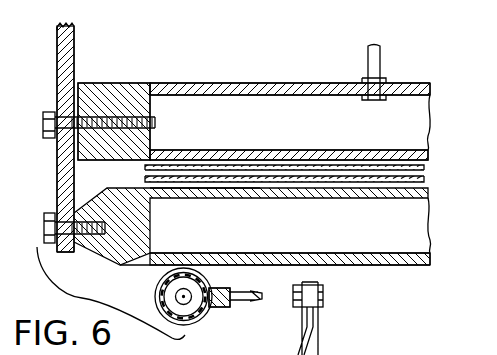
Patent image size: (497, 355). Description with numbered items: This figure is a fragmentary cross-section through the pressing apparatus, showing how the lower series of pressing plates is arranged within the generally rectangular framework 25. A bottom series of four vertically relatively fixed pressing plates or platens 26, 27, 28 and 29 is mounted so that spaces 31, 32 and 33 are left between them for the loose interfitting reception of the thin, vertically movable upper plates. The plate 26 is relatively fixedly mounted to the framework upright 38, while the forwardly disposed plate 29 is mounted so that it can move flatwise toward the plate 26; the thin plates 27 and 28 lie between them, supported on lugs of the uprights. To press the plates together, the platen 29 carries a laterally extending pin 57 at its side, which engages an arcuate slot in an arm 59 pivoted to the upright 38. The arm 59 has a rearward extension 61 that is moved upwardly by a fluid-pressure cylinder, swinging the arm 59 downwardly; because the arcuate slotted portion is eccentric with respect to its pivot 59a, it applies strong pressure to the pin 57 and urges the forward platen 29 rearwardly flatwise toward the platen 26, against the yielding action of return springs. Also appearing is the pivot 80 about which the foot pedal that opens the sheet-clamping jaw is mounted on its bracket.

The framework 25 is at (108, 82).
The pressing plate 26 is at (198, 152).
The pressing plate 27 is at (277, 196).
The pressing plate 28 is at (273, 198).
The pressing plate 29 is at (362, 198).
The space 31 is at (143, 164).
The space 32 is at (143, 178).
The space 33 is at (207, 186).
The framework upright 38 is at (130, 84).
The pin 57 is at (45, 227).
The arm 59 is at (58, 180).
The pivot 59a is at (45, 124).
The rearward extension 61 is at (75, 49).
The pedal pivot 80 is at (326, 297).